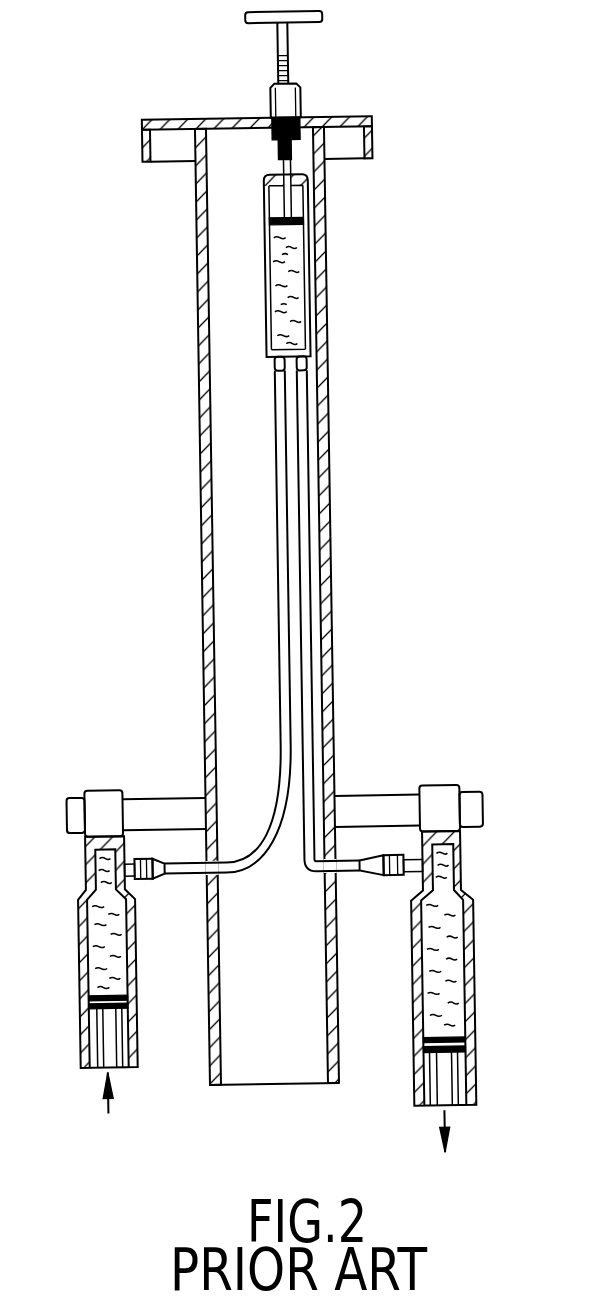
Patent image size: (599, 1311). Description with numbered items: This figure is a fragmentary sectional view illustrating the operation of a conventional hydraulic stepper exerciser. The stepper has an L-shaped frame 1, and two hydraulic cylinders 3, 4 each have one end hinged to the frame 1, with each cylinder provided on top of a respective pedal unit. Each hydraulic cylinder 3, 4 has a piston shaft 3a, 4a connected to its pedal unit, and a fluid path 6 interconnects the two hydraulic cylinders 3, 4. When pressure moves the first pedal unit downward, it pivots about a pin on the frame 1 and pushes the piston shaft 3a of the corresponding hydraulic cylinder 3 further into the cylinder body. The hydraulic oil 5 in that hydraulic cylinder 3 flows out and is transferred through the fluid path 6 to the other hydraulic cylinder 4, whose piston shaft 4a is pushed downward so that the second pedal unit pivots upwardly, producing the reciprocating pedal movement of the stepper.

The frame 1 is at (324, 408).
The hydraulic cylinder 3 is at (78, 952).
The piston shaft 3a is at (96, 1034).
The hydraulic cylinder 4 is at (473, 969).
The piston shaft 4a is at (430, 1077).
The hydraulic oil 5 is at (71, 915).
The fluid path 6 is at (274, 531).